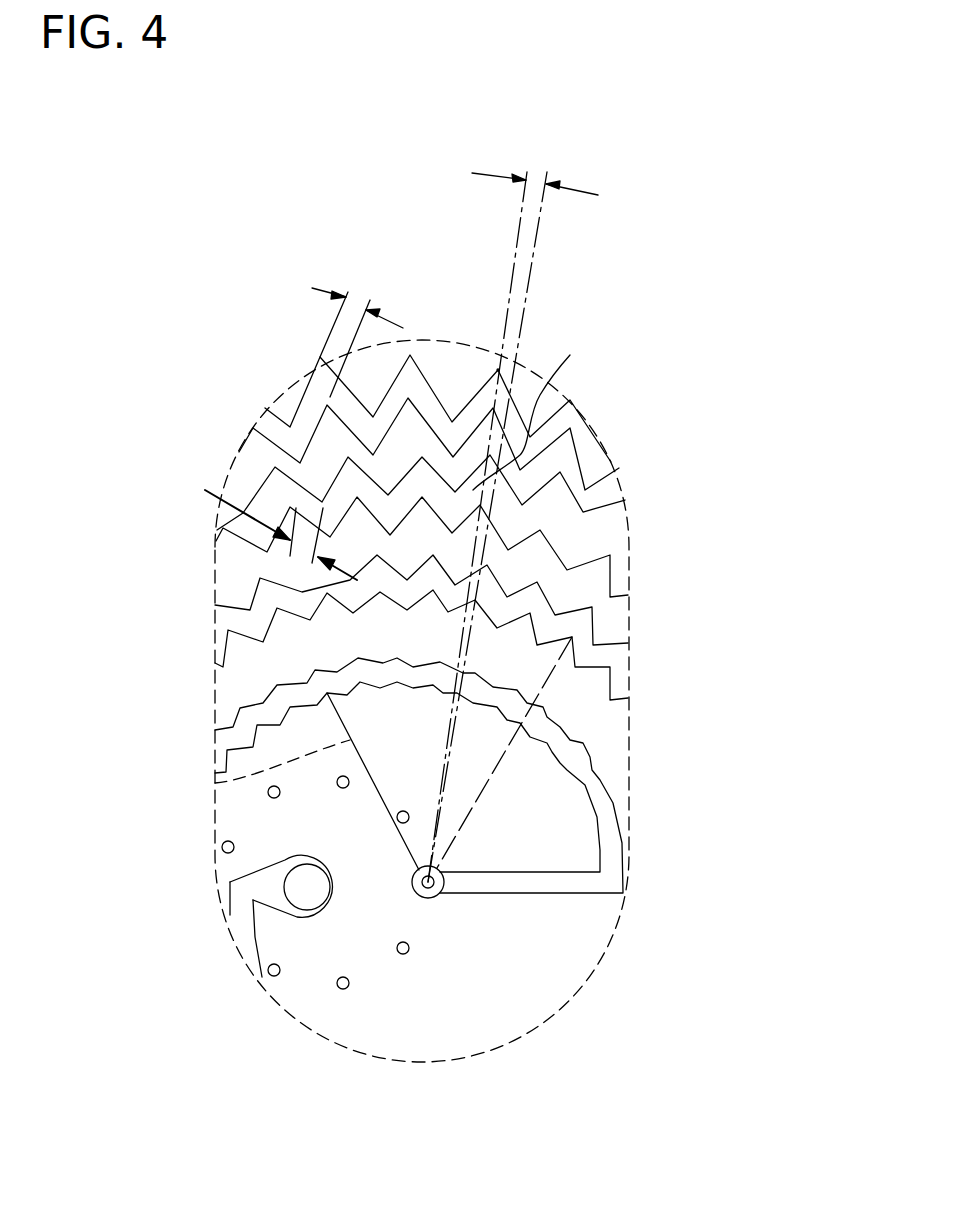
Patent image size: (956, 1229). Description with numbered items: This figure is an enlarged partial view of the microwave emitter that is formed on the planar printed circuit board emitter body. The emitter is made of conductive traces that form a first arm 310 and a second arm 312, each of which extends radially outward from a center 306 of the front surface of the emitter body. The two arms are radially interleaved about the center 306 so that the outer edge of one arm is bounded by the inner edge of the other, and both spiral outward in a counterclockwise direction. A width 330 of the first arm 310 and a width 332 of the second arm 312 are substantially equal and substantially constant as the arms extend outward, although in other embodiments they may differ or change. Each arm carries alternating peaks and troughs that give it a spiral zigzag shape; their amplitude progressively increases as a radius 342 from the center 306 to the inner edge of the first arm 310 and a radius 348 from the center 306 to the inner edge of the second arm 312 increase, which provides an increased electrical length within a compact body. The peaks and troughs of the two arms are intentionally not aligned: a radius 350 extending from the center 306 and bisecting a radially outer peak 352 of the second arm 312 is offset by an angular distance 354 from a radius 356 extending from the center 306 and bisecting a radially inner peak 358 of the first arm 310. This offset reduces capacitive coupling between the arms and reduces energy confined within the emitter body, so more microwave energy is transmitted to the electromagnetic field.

The center 306 is at (417, 892).
The first arm 310 is at (575, 513).
The second arm 312 is at (605, 468).
The width 330 is at (205, 490).
The width 332 is at (312, 288).
The radius 342 is at (215, 783).
The radius 348 is at (540, 690).
The radius 350 is at (516, 230).
The radially outer peak 352 is at (498, 370).
The angular distance 354 is at (542, 172).
The radius 356 is at (530, 273).
The radially inner peak 358 is at (570, 355).